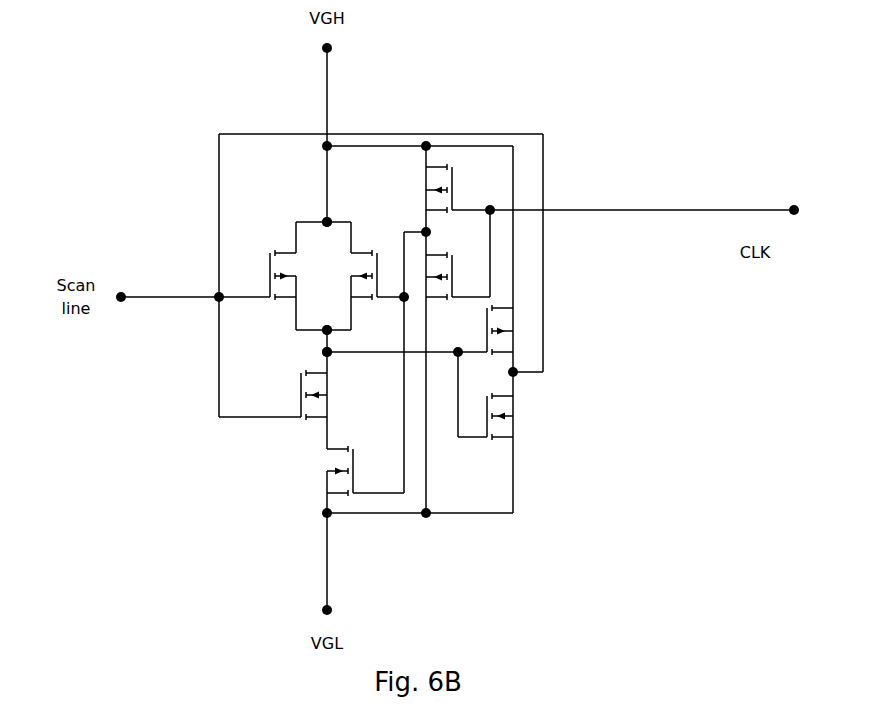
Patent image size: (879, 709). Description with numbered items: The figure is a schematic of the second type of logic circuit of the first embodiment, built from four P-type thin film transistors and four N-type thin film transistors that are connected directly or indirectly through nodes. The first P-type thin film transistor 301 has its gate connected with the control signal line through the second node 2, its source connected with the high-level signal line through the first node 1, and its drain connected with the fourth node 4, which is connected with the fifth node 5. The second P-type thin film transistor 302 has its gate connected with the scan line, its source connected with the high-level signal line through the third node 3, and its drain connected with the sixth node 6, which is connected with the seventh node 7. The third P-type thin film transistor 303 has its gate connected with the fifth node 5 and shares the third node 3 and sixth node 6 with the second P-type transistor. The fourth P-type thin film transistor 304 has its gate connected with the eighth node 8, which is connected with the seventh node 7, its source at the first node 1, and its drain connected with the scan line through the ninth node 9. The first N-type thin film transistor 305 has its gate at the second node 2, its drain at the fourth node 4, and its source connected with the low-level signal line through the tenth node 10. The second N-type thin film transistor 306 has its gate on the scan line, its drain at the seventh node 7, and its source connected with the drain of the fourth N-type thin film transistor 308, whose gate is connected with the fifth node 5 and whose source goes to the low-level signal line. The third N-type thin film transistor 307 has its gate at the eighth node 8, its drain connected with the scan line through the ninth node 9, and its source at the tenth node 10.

The first node 1 is at (428, 127).
The second node 2 is at (494, 198).
The third node 3 is at (321, 207).
The fourth node 4 is at (418, 219).
The fifth node 5 is at (398, 307).
The sixth node 6 is at (325, 315).
The seventh node 7 is at (333, 363).
The eighth node 8 is at (453, 341).
The ninth node 9 is at (502, 372).
The tenth node 10 is at (428, 524).
The first P-type thin film transistor 301 is at (457, 185).
The second P-type thin film transistor 302 is at (270, 266).
The third P-type thin film transistor 303 is at (357, 257).
The fourth P-type thin film transistor 304 is at (497, 322).
The first N-type thin film transistor 305 is at (453, 266).
The second N-type thin film transistor 306 is at (300, 385).
The third N-type thin film transistor 307 is at (513, 397).
The fourth N-type thin film transistor 308 is at (332, 460).